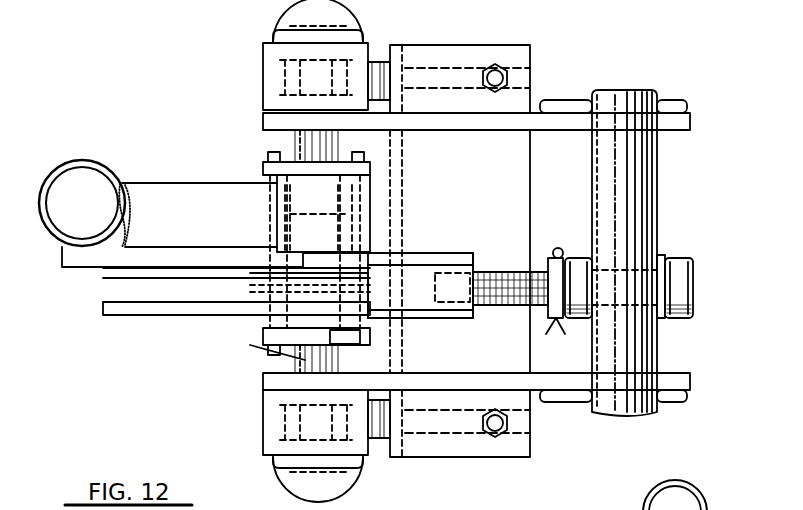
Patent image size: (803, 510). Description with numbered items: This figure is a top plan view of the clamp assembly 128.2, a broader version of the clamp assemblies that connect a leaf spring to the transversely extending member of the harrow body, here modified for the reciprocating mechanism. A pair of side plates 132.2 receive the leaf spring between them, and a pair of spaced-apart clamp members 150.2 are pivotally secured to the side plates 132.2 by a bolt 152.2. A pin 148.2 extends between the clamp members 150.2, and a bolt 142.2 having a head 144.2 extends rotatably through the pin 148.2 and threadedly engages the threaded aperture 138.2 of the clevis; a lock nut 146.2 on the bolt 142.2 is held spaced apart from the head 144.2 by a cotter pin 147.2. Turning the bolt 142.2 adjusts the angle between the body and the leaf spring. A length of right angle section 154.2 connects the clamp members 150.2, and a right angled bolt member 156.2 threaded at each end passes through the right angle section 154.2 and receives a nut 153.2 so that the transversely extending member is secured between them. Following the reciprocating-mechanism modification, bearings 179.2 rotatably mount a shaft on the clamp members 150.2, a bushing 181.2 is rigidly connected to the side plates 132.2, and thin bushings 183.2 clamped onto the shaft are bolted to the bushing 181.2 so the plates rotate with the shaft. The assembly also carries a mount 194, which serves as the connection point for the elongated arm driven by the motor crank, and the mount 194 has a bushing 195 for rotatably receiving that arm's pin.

The clamp assembly 128.2 is at (176, 80).
The mount 194 is at (135, 158).
The bushing 195 is at (95, 160).
The bearings 179.2 is at (265, 97).
The thin bushings 183.2 is at (266, 163).
The bushing 181.2 is at (312, 226).
The side plates 132.2 is at (117, 275).
The bolt 152.2 is at (290, 348).
The right angle section 154.2 is at (436, 105).
The nut 153.2 is at (530, 55).
The clamp members 150.2 is at (500, 140).
The pin 148.2 is at (620, 192).
The head 144.2 is at (678, 270).
The cotter pin 147.2 is at (554, 238).
The bolt 142.2 is at (575, 268).
The threaded aperture 138.2 is at (482, 268).
The lock nut 146.2 is at (560, 326).
The right angled bolt member 156.2 is at (443, 420).